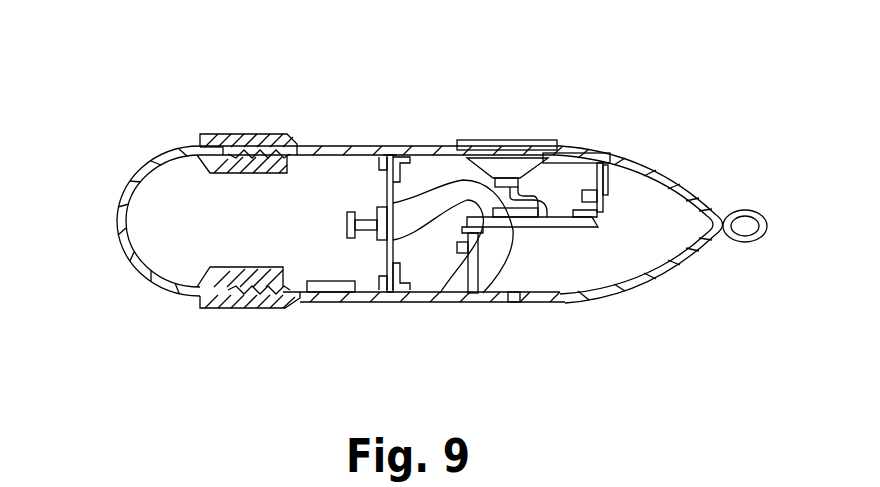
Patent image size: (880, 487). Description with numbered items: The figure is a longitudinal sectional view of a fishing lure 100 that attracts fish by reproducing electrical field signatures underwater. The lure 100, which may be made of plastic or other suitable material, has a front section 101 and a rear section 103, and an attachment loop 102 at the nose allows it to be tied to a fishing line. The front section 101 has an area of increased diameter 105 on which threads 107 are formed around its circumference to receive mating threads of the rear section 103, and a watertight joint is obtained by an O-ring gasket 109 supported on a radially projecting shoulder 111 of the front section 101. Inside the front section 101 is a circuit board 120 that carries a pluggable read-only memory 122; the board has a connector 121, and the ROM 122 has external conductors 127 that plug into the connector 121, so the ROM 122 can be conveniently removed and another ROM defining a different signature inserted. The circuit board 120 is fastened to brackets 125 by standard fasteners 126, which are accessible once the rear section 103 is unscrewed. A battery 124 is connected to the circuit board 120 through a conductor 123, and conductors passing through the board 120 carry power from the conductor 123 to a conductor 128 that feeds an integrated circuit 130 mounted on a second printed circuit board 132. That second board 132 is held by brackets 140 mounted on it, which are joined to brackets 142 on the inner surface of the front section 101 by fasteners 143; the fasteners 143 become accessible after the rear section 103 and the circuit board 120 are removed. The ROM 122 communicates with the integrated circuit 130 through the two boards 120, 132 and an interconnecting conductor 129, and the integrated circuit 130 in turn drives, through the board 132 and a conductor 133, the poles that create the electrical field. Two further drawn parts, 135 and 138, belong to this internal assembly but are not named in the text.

The fishing lure 100 is at (390, 153).
The front section 101 is at (700, 203).
The attachment loop 102 is at (767, 215).
The rear section 103 is at (115, 200).
The area of increased diameter 105 is at (233, 134).
The threads 107 is at (272, 142).
The O-ring gasket 109 is at (213, 131).
The radially projecting shoulder 111 is at (225, 145).
The circuit board 120 is at (386, 180).
The connector 121 is at (378, 208).
The pluggable read-only memory (ROM) 122 is at (345, 220).
The conductor 123 is at (365, 282).
The battery 124 is at (330, 291).
The brackets 125 is at (413, 157).
The fasteners 126 is at (380, 158).
The external conductors 127 is at (367, 232).
The conductor 128 is at (430, 285).
The interconnecting conductor 129 is at (420, 200).
The integrated circuit 130 is at (527, 217).
The second printed circuit board 132 is at (596, 227).
The conductor 133 is at (586, 190).
The discharge hook 135 is at (548, 170).
The cap 138 is at (483, 140).
The brackets 140 is at (525, 148).
The brackets 142 is at (603, 197).
The fasteners 143 is at (605, 163).